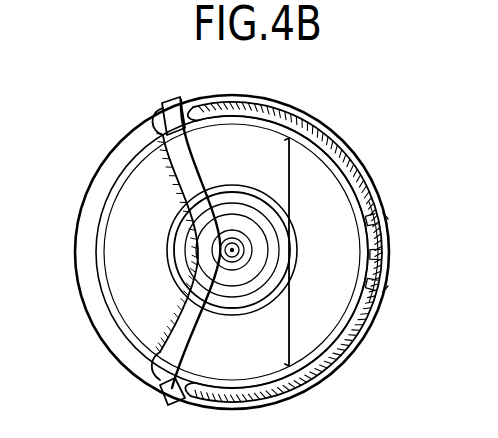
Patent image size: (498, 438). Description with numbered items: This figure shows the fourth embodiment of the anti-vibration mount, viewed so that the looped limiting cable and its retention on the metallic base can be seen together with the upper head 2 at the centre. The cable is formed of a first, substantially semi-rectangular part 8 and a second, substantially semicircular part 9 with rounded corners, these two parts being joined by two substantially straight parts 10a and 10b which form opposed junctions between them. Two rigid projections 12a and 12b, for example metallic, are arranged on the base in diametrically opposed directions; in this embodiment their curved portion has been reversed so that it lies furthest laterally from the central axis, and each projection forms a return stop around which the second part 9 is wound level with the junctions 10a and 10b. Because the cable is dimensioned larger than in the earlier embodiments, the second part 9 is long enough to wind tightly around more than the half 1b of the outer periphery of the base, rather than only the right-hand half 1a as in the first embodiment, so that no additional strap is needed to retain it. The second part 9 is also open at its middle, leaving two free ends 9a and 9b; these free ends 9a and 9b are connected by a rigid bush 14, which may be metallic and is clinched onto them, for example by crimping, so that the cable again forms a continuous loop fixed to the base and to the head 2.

The right-hand half of the base 1a is at (107, 197).
The half of the outer periphery of the base 1b is at (338, 330).
The upper head 2 is at (250, 325).
The first part of the cable 8 is at (157, 160).
The second part of the cable 9 is at (328, 150).
The free end of the second part 9a is at (388, 290).
The free end of the second part 9b is at (390, 218).
The straight part forming a joint 10a is at (152, 123).
The straight part forming a joint 10b is at (153, 365).
The rigid projection 12a is at (177, 117).
The rigid projection 12b is at (163, 393).
The rigid bush 14 is at (383, 260).